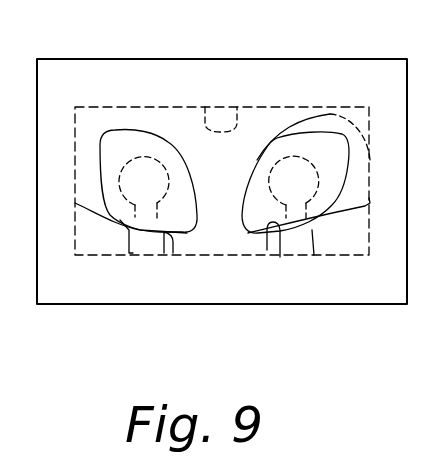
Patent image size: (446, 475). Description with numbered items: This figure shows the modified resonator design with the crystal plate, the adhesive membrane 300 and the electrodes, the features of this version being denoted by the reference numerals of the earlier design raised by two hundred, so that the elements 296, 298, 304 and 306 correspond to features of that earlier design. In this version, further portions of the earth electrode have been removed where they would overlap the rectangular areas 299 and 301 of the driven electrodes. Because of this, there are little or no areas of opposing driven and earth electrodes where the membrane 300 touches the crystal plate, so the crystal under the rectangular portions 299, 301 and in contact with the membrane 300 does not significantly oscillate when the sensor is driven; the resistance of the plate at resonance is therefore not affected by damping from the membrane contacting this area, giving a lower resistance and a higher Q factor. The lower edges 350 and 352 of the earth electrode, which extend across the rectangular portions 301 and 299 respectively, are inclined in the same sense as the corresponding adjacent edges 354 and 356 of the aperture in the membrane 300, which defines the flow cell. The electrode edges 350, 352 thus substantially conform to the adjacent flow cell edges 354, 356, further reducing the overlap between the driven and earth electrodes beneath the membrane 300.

The first opening 296 is at (147, 158).
The second opening 298 is at (291, 158).
The rectangular area of the driven electrodes 299 is at (307, 223).
The membrane 300 is at (397, 73).
The rectangular area of the driven electrodes 301 is at (130, 214).
The first lobe 304 is at (97, 157).
The second lobe 306 is at (345, 172).
The lower edge of the electrode 350 is at (165, 235).
The lower edge of the electrode 352 is at (320, 222).
The edge of the aperture in the membrane 354 is at (157, 230).
The edge of the aperture in the membrane 356 is at (273, 227).